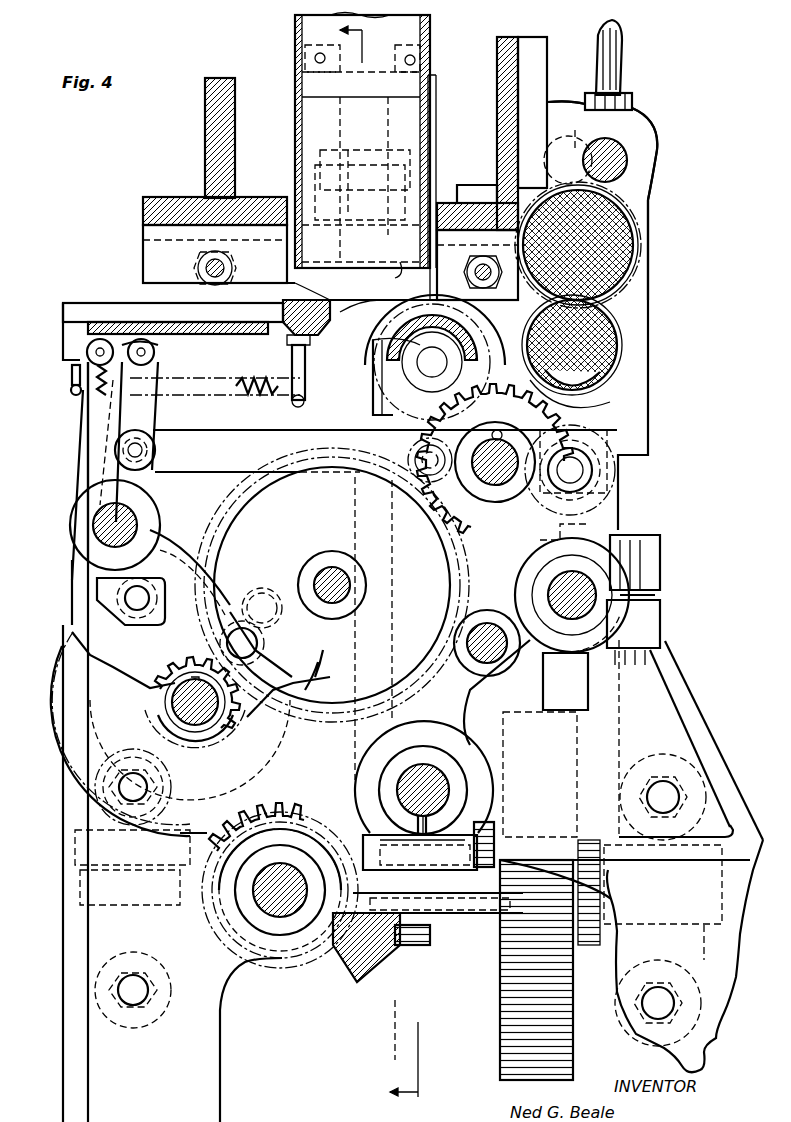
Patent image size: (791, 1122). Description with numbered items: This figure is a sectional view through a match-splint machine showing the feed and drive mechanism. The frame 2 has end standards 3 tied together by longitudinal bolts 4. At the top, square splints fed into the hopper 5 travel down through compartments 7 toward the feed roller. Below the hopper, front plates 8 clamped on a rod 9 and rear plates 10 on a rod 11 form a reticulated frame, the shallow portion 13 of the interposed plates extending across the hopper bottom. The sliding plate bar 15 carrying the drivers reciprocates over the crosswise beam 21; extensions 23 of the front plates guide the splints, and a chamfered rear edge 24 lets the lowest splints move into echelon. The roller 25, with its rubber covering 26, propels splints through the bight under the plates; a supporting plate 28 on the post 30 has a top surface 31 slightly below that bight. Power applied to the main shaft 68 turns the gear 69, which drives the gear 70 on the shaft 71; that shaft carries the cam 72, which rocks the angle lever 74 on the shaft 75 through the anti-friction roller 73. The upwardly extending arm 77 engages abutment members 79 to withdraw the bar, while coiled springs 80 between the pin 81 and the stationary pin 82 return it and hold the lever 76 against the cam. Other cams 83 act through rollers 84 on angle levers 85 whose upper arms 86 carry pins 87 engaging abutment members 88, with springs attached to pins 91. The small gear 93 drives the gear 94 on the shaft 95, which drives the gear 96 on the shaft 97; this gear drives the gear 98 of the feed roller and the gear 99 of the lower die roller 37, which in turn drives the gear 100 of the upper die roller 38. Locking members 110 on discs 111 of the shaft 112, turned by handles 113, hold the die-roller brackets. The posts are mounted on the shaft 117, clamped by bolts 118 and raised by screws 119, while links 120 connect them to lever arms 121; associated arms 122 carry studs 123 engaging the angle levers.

The frame 2 is at (360, 9).
The end standards 3 is at (111, 876).
The longitudinal bolts 4 is at (138, 994).
The hopper 5 is at (367, 559).
The compartments 7 is at (389, 35).
The plates 8 is at (492, 168).
The rod 9 is at (478, 265).
The plates 10 is at (215, 180).
The rod 11 is at (222, 270).
The shallow portion 13 is at (345, 287).
The sliding plate bar 15 is at (80, 312).
The beam 21 is at (292, 325).
The extensions 23 is at (395, 257).
The chamfered rear edge 24 is at (438, 284).
The roller 25 is at (470, 345).
The rubber covering 26 is at (405, 340).
The supporting plate 28 is at (366, 400).
The post 30 is at (527, 641).
The top surface 31 is at (360, 313).
The lower die roller 37 is at (612, 352).
The upper die roller 38 is at (620, 250).
The main shaft 68 is at (266, 898).
The gear 69 is at (292, 818).
The gear 70 is at (228, 832).
The shaft 71 is at (206, 714).
The cam 72 is at (300, 676).
The anti-friction roller 73 is at (262, 592).
The angle lever 74 is at (183, 548).
The shaft 75 is at (92, 528).
The lever 76 is at (76, 392).
The upwardly extending arm 77 is at (86, 470).
The abutment members 79 is at (75, 352).
The coiled springs 80 is at (245, 392).
The pin 81 is at (70, 378).
The stationary pin 82 is at (306, 385).
The cams 83 is at (186, 765).
The rollers 84 is at (258, 638).
The angle levers 85 is at (176, 614).
The upper arms 86 is at (137, 432).
The pins 87 is at (155, 353).
The abutment members 88 is at (124, 320).
The pins 91 is at (102, 435).
The small gear 93 is at (170, 697).
The gear 94 is at (238, 484).
The shaft 95 is at (338, 578).
The gear 96 is at (495, 458).
The shaft 97 is at (497, 480).
The gear 98 is at (466, 395).
The gear 99 is at (616, 405).
The gear 100 is at (622, 287).
The locking members 110 is at (574, 112).
The discs 111 is at (651, 192).
The shaft 112 is at (605, 149).
The handles 113 is at (625, 88).
The shaft 117 is at (430, 778).
The bolts 118 is at (492, 832).
The screws 119 is at (432, 937).
The links 120 is at (266, 447).
The lever arms 121 is at (168, 448).
The arms 122 is at (106, 590).
The studs 123 is at (135, 599).